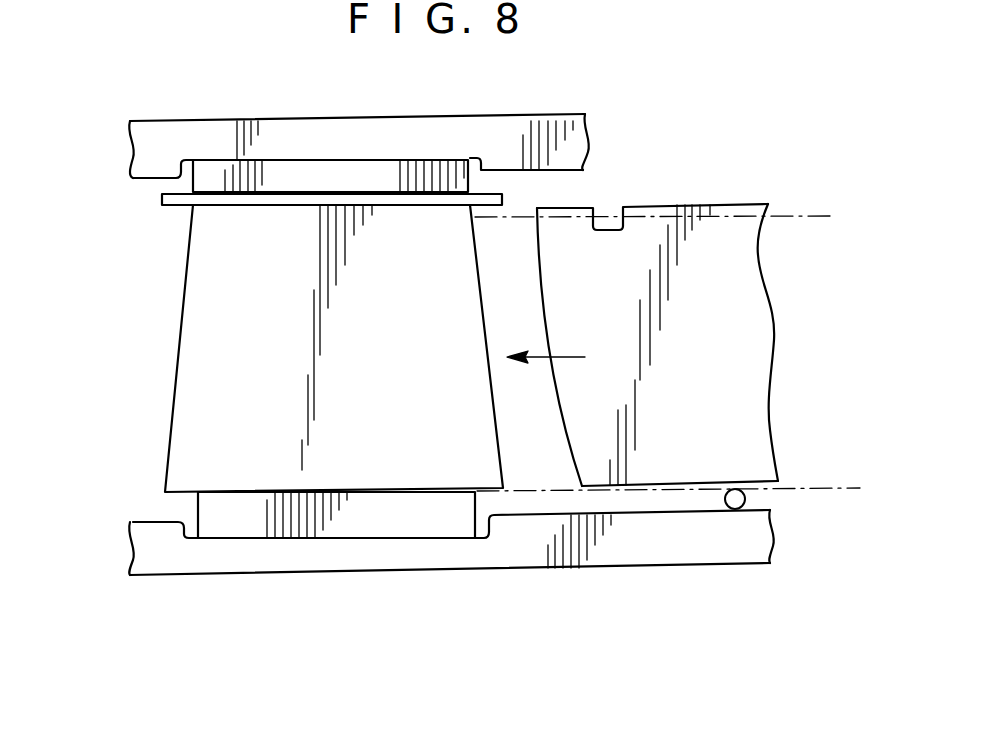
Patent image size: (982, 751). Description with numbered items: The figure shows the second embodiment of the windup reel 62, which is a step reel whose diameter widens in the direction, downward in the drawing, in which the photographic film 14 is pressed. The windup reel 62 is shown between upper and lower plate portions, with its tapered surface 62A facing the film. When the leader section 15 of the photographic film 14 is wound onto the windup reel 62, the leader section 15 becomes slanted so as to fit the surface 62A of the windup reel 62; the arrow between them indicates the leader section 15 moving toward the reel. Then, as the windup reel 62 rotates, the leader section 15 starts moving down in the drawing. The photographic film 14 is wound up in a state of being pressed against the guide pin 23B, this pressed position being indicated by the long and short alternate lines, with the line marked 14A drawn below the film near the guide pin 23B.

The photographic film 14 is at (737, 203).
The axis of lens barrel 14A is at (828, 488).
The leader section 15 is at (592, 292).
The guide pin 23B is at (731, 509).
The windup reel 62 is at (183, 298).
The surface 62A is at (227, 430).